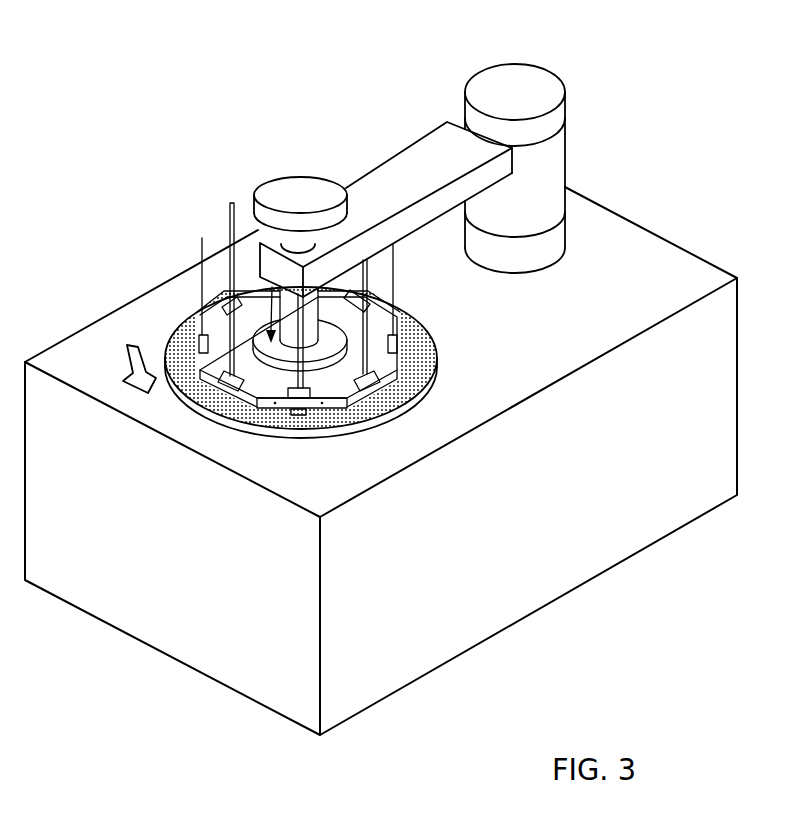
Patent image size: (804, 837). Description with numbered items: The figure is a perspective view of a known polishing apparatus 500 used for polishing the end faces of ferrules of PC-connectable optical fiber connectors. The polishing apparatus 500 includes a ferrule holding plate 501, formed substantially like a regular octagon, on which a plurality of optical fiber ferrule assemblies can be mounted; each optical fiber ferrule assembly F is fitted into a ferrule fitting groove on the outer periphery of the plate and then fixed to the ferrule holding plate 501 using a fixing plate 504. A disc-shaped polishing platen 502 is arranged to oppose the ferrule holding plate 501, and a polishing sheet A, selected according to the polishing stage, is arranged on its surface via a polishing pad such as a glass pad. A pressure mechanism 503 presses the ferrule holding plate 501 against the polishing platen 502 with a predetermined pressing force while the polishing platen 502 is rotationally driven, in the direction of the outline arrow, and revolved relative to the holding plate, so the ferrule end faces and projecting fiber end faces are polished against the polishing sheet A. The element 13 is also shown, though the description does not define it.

The polishing apparatus 500 is at (266, 117).
The pin 13 is at (230, 204).
The ferrule holding plate 501 is at (218, 323).
The polishing platen 502 is at (426, 408).
The pressure mechanism 503 is at (325, 302).
The fixing plate 504 is at (339, 407).
The polishing sheet A is at (435, 335).
The optical fiber ferrule assembly F is at (294, 414).